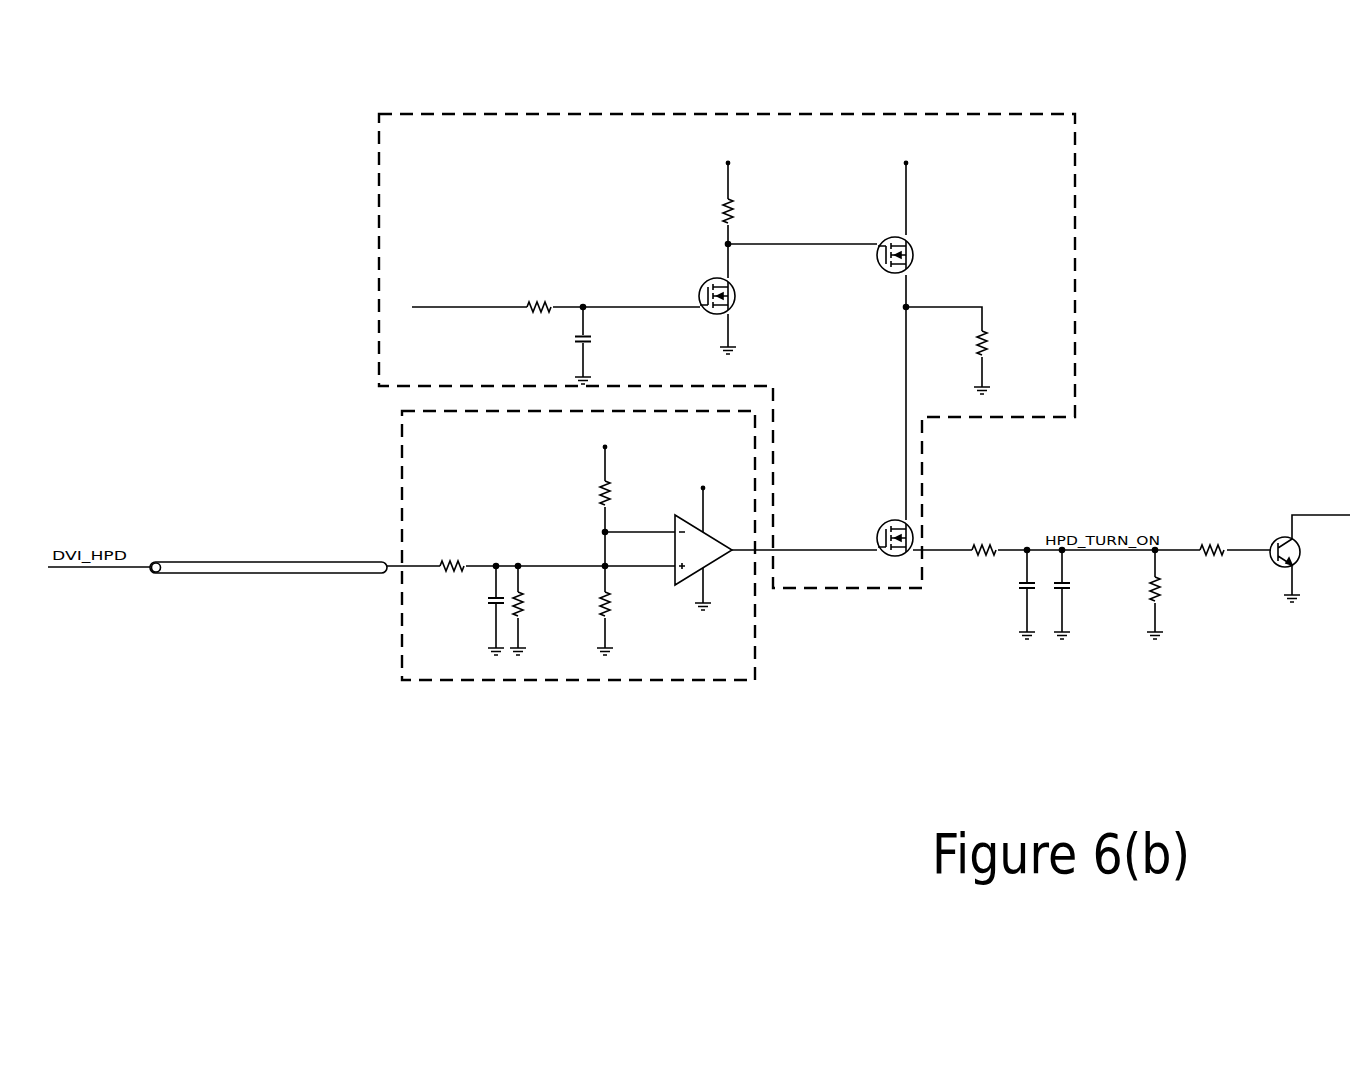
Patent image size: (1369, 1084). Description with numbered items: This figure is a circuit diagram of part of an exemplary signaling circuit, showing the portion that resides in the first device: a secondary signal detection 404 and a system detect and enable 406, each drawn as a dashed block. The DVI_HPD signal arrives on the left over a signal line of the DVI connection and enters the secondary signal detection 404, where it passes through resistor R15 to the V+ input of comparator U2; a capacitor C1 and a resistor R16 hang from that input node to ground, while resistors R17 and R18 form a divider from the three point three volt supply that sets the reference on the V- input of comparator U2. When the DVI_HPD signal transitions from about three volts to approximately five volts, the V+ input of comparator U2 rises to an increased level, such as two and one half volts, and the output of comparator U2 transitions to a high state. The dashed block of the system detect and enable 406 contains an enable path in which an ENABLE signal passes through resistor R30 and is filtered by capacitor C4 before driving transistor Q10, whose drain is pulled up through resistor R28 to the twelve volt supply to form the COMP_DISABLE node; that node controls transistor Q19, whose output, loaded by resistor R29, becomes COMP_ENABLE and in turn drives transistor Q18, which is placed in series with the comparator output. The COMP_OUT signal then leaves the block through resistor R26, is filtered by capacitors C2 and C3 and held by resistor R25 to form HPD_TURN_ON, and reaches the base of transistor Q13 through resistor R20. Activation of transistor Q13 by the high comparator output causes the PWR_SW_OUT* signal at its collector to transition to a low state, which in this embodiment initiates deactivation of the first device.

The secondary signal detection 404 is at (605, 715).
The system detect and enable 406 is at (1108, 212).
The resistor R30 is at (539, 286).
The capacitor C4 is at (606, 345).
The resistor R28 is at (755, 192).
The transistor Q10 is at (745, 299).
The transistor Q19 is at (927, 224).
The resistor R29 is at (982, 350).
The transistor Q18 is at (870, 525).
The resistor R15 is at (453, 546).
The capacitor C1 is at (458, 610).
The resistor R16 is at (553, 610).
The resistor R17 is at (634, 479).
The resistor R18 is at (632, 593).
The comparator U2 is at (710, 537).
The resistor R26 is at (981, 525).
The resistor R20 is at (1214, 526).
The capacitor C2 is at (997, 594).
The capacitor C3 is at (1092, 594).
The resistor R25 is at (1180, 594).
The transistor Q13 is at (1309, 550).